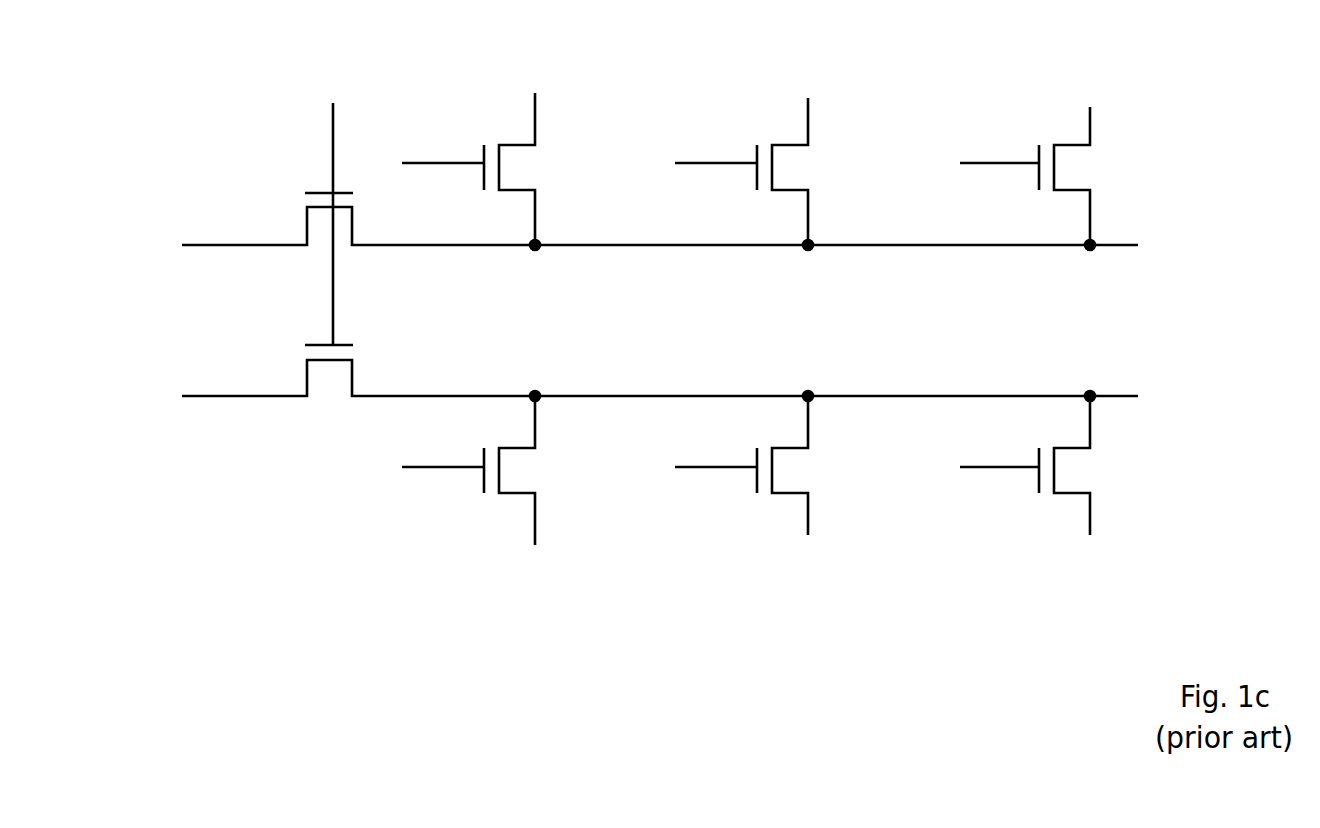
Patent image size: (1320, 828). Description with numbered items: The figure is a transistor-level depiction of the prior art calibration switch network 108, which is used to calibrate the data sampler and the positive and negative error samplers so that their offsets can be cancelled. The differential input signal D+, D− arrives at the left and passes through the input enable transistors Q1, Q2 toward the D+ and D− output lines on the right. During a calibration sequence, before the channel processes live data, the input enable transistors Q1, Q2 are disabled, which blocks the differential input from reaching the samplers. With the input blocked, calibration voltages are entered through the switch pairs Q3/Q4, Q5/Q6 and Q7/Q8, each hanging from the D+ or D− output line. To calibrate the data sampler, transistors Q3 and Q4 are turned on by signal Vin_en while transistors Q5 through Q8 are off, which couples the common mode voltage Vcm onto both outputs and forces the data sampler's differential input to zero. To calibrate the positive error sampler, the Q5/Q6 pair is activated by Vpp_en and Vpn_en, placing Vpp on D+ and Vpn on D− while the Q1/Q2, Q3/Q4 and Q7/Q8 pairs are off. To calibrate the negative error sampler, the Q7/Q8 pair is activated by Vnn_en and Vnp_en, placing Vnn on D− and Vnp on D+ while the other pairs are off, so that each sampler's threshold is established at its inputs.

The calibration switch network 108 is at (681, 367).
The input enable transistor Q1 is at (660, 224).
The input enable transistor Q2 is at (660, 369).
The transistor Q3 is at (471, 171).
The transistor Q4 is at (471, 468).
The transistor Q5 is at (744, 174).
The transistor Q6 is at (744, 463).
The transistor Q7 is at (1027, 178).
The transistor Q8 is at (1027, 464).